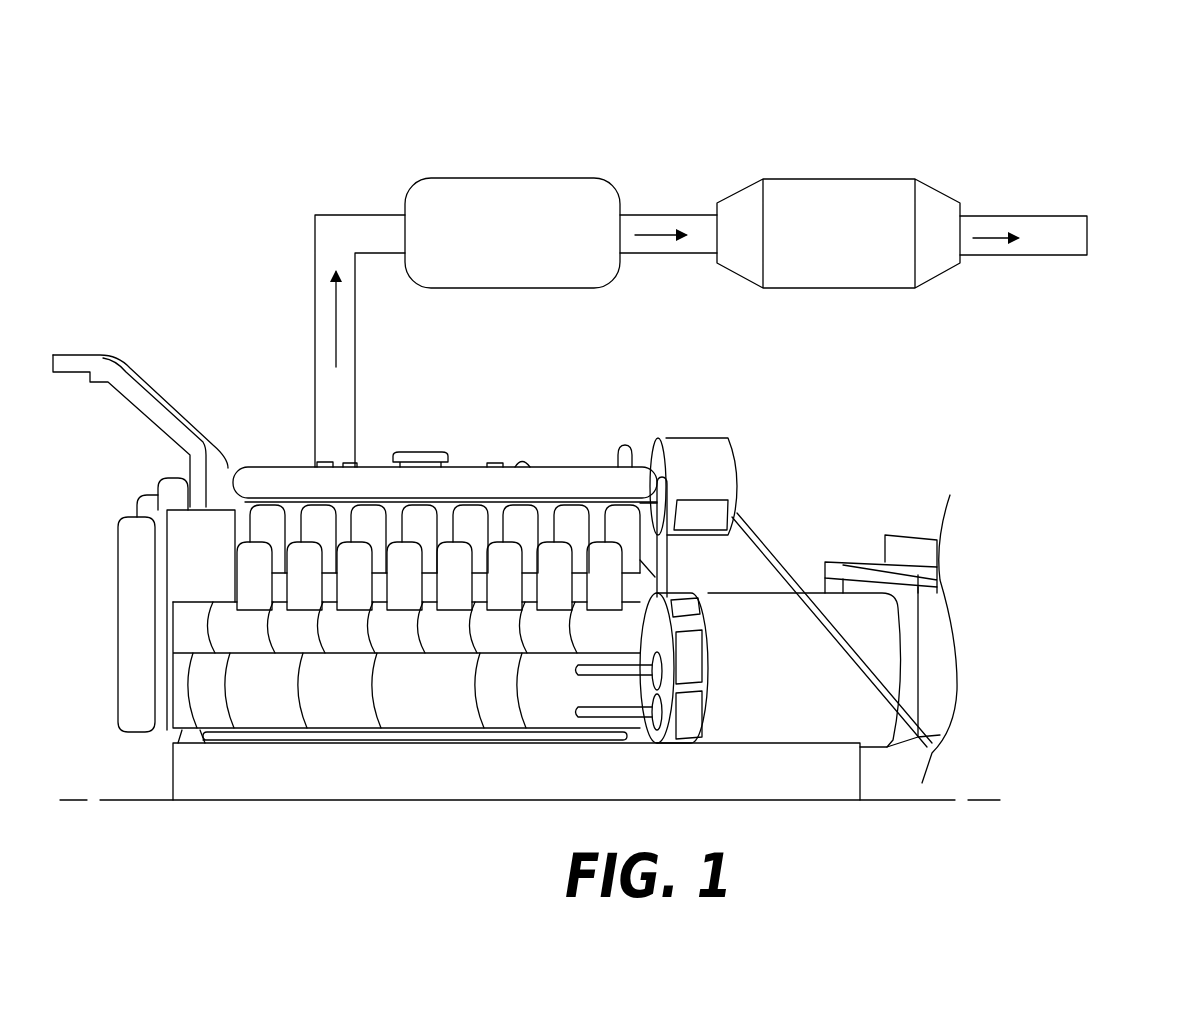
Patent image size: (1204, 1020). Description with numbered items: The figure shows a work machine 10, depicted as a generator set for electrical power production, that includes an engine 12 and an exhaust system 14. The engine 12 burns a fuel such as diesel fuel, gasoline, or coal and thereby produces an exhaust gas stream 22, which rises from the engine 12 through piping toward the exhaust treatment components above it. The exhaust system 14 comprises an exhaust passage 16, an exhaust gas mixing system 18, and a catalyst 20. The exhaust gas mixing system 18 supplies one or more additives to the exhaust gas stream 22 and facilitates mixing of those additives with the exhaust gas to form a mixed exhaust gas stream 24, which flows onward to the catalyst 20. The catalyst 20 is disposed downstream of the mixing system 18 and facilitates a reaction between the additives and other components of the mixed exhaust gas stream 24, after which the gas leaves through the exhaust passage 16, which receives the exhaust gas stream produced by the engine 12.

The work machine 10 is at (1094, 687).
The engine 12 is at (454, 623).
The exhaust system 14 is at (701, 106).
The exhaust passage 16 is at (1073, 212).
The exhaust gas mixing system 18 is at (461, 295).
The catalyst 20 is at (912, 296).
The exhaust gas stream 22 is at (336, 333).
The mixed exhaust gas stream 24 is at (666, 236).